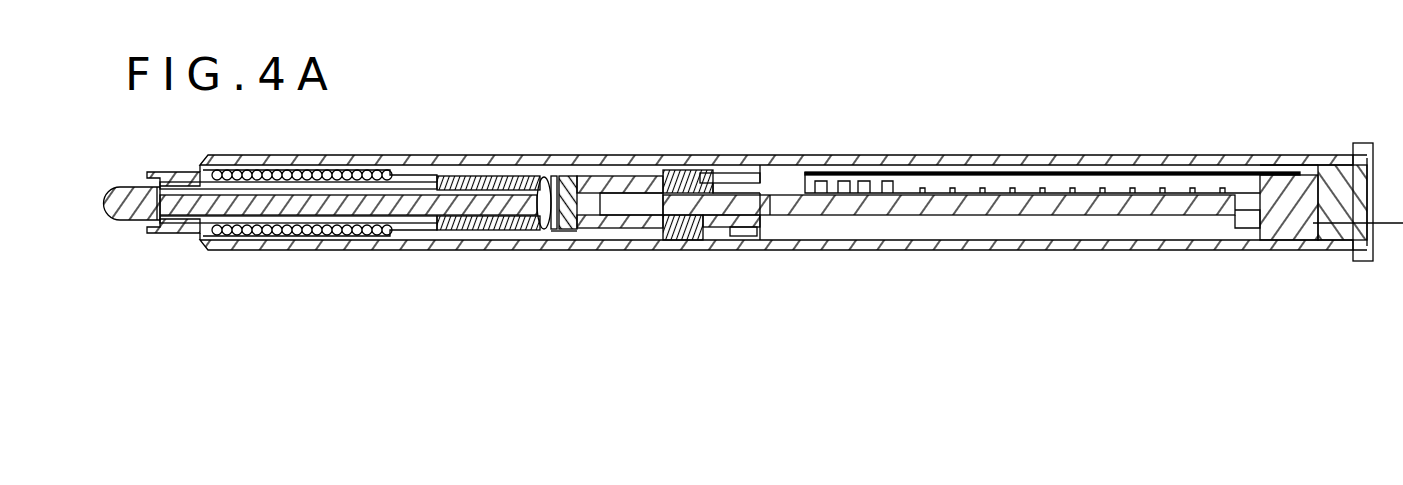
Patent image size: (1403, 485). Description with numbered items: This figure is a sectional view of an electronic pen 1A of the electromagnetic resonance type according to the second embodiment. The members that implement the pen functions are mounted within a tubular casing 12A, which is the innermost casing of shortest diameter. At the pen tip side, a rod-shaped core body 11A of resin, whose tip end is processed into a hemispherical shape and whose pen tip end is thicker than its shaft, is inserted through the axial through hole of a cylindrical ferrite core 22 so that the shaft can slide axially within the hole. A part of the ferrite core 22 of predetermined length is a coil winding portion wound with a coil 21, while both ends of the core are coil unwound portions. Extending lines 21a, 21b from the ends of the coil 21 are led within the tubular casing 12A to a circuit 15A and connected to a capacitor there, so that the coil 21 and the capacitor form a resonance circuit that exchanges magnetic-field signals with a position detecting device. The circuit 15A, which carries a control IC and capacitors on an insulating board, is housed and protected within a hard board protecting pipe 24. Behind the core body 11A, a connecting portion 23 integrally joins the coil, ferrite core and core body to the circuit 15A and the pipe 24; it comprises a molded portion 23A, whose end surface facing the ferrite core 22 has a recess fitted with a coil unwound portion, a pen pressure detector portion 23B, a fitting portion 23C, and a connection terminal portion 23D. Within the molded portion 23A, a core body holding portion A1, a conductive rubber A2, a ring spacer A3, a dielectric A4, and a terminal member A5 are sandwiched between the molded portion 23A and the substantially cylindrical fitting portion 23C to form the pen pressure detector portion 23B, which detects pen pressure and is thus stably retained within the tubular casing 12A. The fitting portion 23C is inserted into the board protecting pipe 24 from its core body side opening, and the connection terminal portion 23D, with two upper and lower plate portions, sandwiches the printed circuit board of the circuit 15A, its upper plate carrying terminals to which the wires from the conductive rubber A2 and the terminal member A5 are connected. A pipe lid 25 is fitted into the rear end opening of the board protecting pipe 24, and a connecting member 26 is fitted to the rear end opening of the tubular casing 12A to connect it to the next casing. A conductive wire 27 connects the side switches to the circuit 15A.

The electronic pen 1A is at (603, 90).
The core body 11A is at (117, 207).
The tubular casing 12A is at (977, 156).
The circuit 15A is at (796, 204).
The coil 21 is at (291, 232).
The extending line 21a is at (457, 165).
The extending line 21b is at (385, 171).
The ferrite core 22 is at (196, 234).
The connecting portion 23 is at (603, 309).
The molded portion 23A is at (438, 238).
The pen pressure detector portion 23B is at (568, 286).
The fitting portion 23C is at (700, 240).
The connection terminal portion 23D is at (759, 258).
The board protecting pipe 24 is at (812, 250).
The pipe lid 25 is at (1299, 188).
The connecting member 26 is at (1358, 163).
The conductive wire 27 is at (1253, 238).
The core body holding portion A1 is at (500, 232).
The conductive rubber A2 is at (552, 232).
The ring spacer A3 is at (563, 232).
The dielectric A4 is at (577, 232).
The terminal member A5 is at (608, 232).